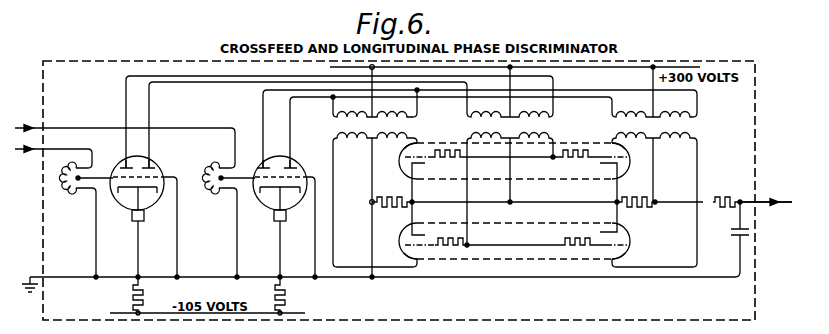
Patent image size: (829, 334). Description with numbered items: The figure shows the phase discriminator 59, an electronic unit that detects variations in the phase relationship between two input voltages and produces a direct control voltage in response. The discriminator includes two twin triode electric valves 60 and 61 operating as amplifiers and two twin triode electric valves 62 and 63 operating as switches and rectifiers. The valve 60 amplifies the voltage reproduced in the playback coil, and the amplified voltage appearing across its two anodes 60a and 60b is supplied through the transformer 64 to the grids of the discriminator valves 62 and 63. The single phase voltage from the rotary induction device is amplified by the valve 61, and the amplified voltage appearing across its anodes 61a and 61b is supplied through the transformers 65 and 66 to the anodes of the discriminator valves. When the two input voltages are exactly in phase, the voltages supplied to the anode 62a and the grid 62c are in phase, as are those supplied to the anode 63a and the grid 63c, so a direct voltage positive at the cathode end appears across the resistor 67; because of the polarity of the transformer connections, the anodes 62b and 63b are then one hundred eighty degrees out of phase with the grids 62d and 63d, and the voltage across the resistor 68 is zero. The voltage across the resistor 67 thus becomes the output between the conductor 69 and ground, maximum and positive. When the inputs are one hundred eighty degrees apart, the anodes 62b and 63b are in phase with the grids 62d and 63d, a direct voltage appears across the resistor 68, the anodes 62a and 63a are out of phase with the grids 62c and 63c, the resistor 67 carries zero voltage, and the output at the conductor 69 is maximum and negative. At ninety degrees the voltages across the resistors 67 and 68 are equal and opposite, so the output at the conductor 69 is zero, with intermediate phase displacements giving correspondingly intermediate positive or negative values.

The phase discriminator 59 is at (752, 118).
The twin triode electric valve 60 is at (124, 163).
The anode 60a is at (130, 165).
The anode 60b is at (153, 165).
The twin triode electric valve 61 is at (279, 158).
The anode 61a is at (262, 165).
The anode 61b is at (292, 165).
The twin triode electric valve 62 is at (432, 144).
The anode 62a is at (410, 146).
The anode 62b is at (619, 148).
The grid 62c is at (400, 182).
The grid 62d is at (616, 168).
The twin triode electric valve 63 is at (434, 227).
The anode 63a is at (410, 257).
The anode 63b is at (618, 257).
The grid 63c is at (400, 221).
The grid 63d is at (627, 240).
The transformer 64 is at (550, 122).
The transformer 65 is at (332, 123).
The transformer 66 is at (693, 122).
The resistor 67 is at (392, 210).
The resistor 68 is at (638, 209).
The output conductor 69 is at (767, 200).